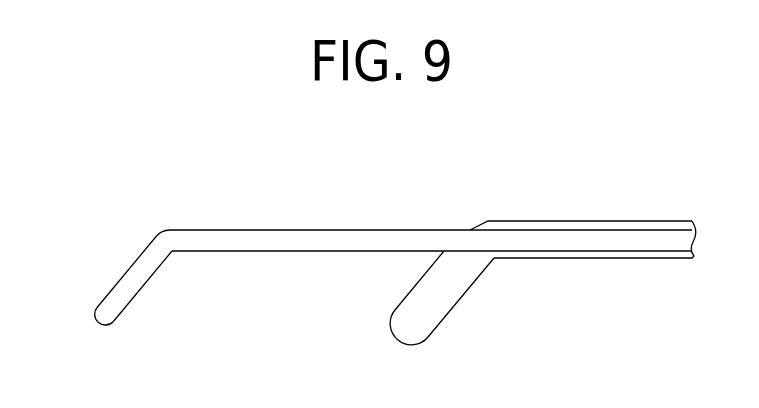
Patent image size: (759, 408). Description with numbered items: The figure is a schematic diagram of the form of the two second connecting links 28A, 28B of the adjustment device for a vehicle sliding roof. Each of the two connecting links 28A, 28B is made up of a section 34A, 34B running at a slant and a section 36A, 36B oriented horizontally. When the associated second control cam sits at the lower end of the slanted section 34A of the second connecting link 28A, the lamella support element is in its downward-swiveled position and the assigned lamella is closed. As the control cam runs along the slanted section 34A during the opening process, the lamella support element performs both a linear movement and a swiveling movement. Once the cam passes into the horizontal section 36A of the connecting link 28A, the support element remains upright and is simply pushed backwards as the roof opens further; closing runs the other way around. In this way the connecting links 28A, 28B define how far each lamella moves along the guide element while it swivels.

The second connecting link 28A is at (378, 228).
The second connecting link 28B is at (555, 239).
The slanted section 34A is at (121, 278).
The slanted section 34B is at (447, 315).
The horizontal section 36A is at (253, 229).
The horizontal section 36B is at (563, 221).